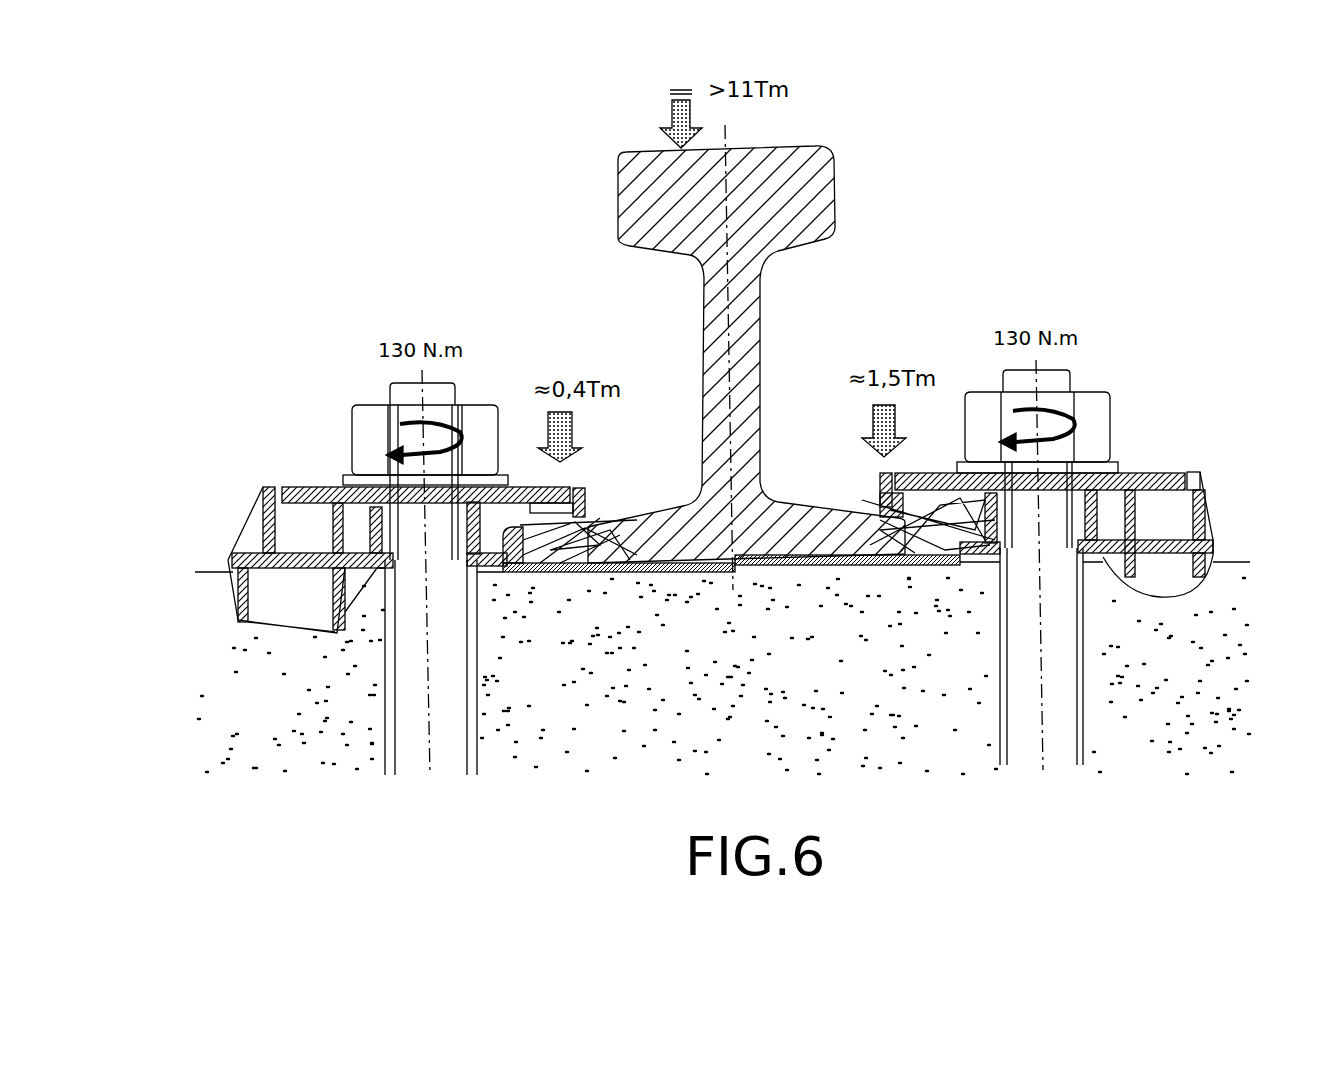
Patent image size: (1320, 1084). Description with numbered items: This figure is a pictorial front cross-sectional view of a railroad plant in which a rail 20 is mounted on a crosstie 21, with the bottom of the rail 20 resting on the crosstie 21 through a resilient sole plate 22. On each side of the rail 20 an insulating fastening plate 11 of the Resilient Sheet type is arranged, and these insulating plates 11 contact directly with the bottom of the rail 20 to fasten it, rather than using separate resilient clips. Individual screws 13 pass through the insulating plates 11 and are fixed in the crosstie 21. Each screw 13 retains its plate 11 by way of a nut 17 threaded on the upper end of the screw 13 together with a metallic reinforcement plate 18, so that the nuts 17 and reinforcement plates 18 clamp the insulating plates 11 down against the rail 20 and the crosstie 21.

The insulating plate 11 is at (248, 545).
The screw 13 is at (417, 707).
The nut 17 is at (373, 430).
The metallic reinforcement plate 18 is at (317, 503).
The rail 20 is at (705, 330).
The crosstie 21 is at (1160, 702).
The resilient sole plate 22 is at (767, 553).